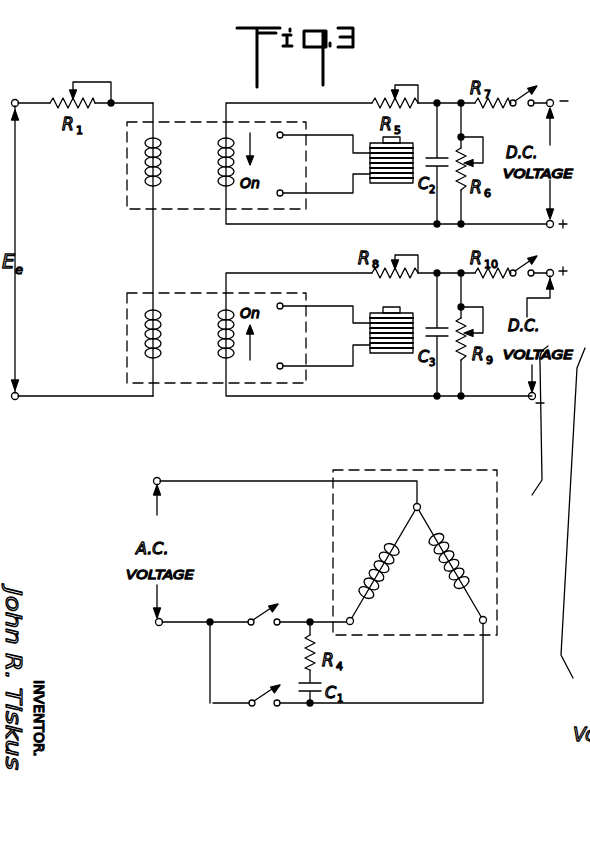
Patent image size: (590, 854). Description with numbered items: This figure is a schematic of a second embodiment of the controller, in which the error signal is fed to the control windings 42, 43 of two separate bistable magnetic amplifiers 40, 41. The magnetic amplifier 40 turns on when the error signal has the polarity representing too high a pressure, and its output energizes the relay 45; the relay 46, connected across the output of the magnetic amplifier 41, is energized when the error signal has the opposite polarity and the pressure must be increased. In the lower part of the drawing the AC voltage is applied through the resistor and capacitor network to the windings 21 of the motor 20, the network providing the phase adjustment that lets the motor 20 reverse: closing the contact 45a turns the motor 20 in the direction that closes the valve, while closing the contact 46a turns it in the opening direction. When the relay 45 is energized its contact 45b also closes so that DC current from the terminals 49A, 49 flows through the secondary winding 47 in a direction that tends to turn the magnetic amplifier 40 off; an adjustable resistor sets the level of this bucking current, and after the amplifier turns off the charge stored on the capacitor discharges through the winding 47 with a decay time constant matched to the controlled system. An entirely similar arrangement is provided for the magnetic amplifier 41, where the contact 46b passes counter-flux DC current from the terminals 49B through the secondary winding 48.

The motor 20 is at (415, 532).
The windings 21 is at (441, 572).
The bistable magnetic amplifier 40 is at (195, 138).
The bistable magnetic amplifier 41 is at (195, 362).
The control winding 42 is at (145, 173).
The control winding 43 is at (145, 343).
The relay 45 is at (379, 186).
The relay contact 45a is at (263, 615).
The relay contact 45b is at (517, 92).
The relay 46 is at (368, 338).
The relay contact 46a is at (264, 708).
The relay contact 46b is at (516, 270).
The secondary winding 47 is at (217, 168).
The secondary winding 48 is at (217, 345).
The DC voltage terminal 49 is at (555, 221).
The DC voltage terminals 49A is at (565, 90).
The DC voltage terminals 49B is at (523, 412).